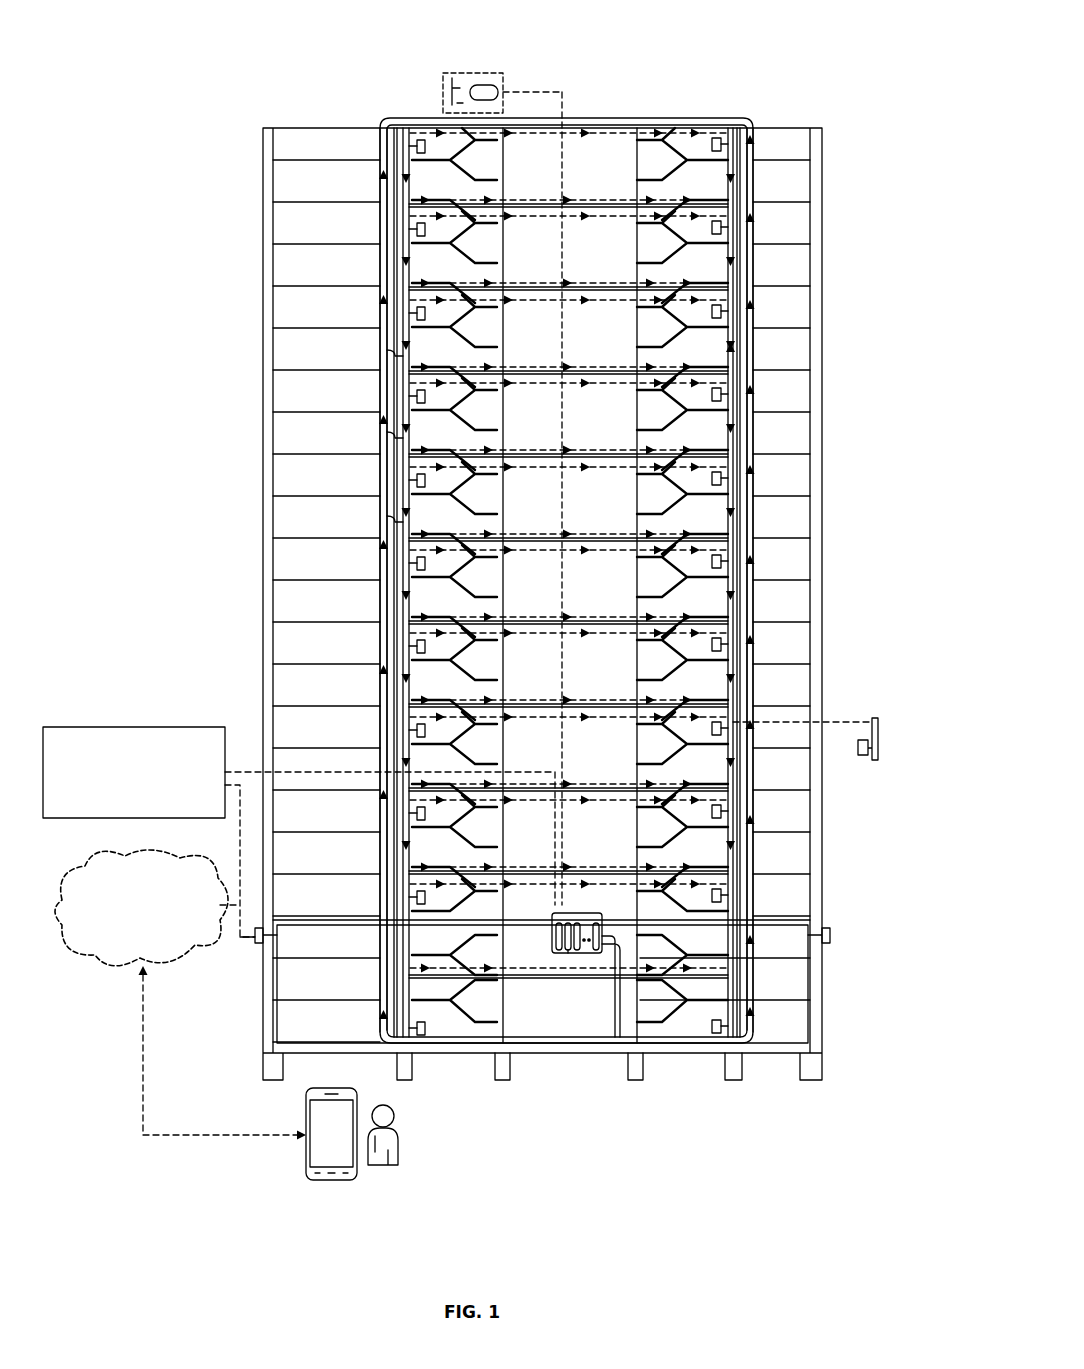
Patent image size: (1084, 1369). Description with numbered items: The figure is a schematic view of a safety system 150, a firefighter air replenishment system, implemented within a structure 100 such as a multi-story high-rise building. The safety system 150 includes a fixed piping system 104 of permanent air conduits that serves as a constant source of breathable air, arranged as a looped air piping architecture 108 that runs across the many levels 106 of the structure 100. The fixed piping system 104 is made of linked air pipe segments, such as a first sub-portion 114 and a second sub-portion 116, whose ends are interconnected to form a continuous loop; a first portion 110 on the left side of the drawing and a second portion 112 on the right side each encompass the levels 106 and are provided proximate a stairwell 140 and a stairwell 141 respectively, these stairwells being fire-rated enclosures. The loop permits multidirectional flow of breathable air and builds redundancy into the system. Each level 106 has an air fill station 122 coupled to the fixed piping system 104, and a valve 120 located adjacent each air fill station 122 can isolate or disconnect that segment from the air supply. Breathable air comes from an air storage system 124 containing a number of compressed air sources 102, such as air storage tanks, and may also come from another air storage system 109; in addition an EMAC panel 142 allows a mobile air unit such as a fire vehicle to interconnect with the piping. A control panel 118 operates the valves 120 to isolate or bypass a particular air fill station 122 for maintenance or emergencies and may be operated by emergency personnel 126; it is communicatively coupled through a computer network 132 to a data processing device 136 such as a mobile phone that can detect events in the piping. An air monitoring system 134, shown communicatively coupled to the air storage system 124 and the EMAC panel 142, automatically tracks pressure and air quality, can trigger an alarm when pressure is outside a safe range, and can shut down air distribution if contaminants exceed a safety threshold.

The structure 100 is at (812, 200).
The compressed air source 102 is at (578, 953).
The fixed piping system 104 is at (840, 955).
The level 106 is at (312, 286).
The looped air piping architecture 108 is at (735, 150).
The another air storage system 109 is at (478, 86).
The first portion 110 is at (395, 600).
The second portion 112 is at (755, 612).
The first sub-portion 114 is at (400, 435).
The second sub-portion 116 is at (400, 518).
The control panel 118 is at (560, 955).
The valve 120 is at (730, 228).
The air fill station 122 is at (735, 1027).
The air storage system 124 is at (567, 953).
The emergency personnel 126 is at (398, 1150).
The computer network 132 is at (180, 995).
The air monitoring system 134 is at (299, 832).
The data processing device 136 is at (320, 1180).
The stairwell 140 is at (445, 157).
The stairwell 141 is at (665, 150).
The EMAC panel 142 is at (830, 935).
The safety system 150 is at (824, 1196).